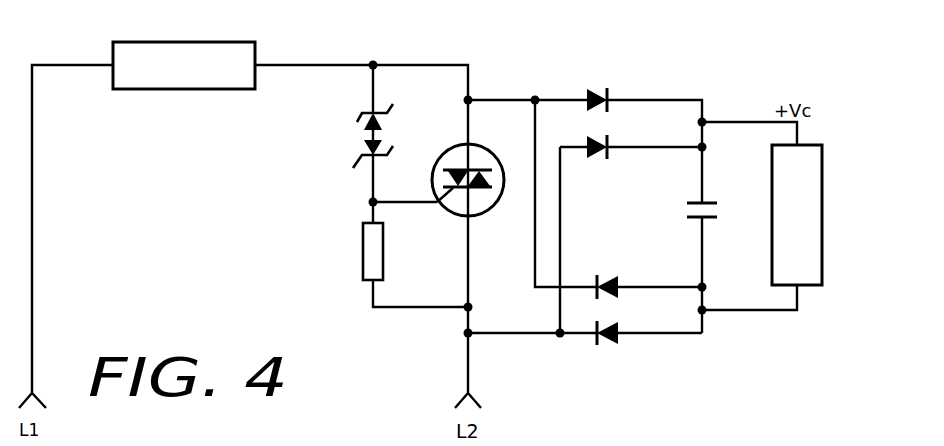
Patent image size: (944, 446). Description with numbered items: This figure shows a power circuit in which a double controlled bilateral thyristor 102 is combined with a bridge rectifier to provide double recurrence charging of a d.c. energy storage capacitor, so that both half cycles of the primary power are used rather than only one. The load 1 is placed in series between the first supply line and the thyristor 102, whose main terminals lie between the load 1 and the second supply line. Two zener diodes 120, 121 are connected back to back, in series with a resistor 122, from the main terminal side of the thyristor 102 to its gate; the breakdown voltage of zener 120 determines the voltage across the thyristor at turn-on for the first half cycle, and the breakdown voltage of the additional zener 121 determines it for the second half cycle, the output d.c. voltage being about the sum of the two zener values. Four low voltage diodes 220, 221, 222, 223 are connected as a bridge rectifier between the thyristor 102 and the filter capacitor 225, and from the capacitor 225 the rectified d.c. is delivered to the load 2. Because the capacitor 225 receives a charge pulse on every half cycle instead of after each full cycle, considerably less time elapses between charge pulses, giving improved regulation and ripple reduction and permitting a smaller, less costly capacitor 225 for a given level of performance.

The load 1 is at (197, 53).
The load 2 is at (808, 247).
The thyristor 102 is at (453, 162).
The zener diode 120 is at (353, 128).
The zener diode 121 is at (355, 150).
The resistor 122 is at (372, 255).
The diode 220 is at (597, 87).
The diode 221 is at (598, 157).
The diode 222 is at (598, 272).
The diode 223 is at (605, 345).
The filter capacitor 225 is at (717, 208).